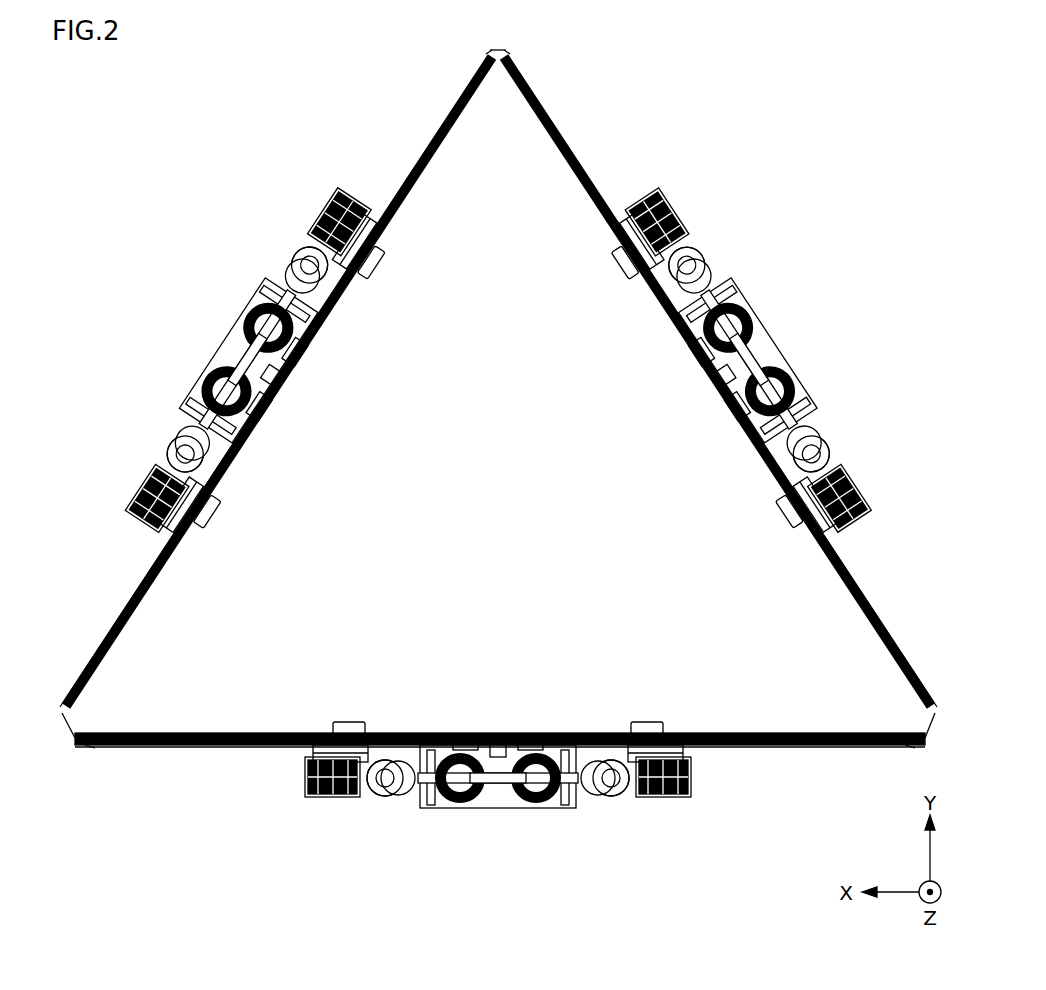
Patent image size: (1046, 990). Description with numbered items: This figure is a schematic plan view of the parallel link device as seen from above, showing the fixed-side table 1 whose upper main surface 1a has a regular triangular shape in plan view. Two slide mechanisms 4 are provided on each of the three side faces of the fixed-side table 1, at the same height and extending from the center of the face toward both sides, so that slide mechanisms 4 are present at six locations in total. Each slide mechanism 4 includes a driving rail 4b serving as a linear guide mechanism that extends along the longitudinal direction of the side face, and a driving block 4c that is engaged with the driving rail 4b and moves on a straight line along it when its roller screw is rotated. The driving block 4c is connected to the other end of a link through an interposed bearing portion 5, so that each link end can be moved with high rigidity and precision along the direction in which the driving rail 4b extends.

The fixed-side table 1 is at (527, 115).
The upper main surface 1a is at (820, 635).
The slide mechanism 4 is at (403, 134).
The driving rail 4b is at (392, 190).
The driving block 4c is at (362, 225).
The bearing portion 5 is at (302, 222).